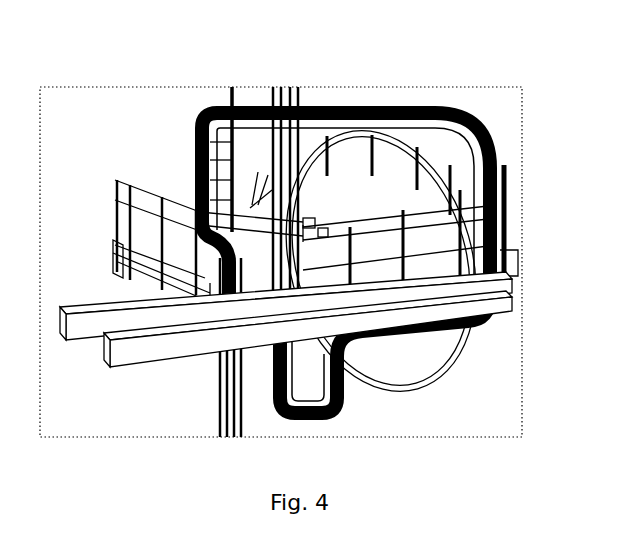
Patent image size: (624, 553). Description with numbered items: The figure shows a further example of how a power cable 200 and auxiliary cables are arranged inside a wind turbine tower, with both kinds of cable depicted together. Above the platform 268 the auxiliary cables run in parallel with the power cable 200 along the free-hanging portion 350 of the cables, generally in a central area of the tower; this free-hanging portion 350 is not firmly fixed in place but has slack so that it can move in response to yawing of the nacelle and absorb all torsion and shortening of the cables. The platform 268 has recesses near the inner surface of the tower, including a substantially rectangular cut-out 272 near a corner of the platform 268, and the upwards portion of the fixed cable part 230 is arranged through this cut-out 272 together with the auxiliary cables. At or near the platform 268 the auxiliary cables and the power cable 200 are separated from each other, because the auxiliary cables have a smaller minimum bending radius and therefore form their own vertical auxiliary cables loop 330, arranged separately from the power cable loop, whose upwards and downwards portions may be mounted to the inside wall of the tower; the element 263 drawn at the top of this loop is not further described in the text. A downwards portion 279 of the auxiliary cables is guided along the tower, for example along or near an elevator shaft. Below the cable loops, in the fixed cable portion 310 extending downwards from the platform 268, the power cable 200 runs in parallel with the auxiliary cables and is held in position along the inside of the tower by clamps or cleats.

The power cable 200 is at (380, 403).
The fixed cable part 230 is at (437, 155).
The tube 263 is at (362, 109).
The platform 268 is at (498, 284).
The cut-out 272 is at (511, 259).
The downwards portion 279 is at (183, 181).
The fixed cable portion 310 is at (203, 375).
The auxiliary cables loop 330 is at (505, 167).
The free-hanging portion 350 is at (47, 261).